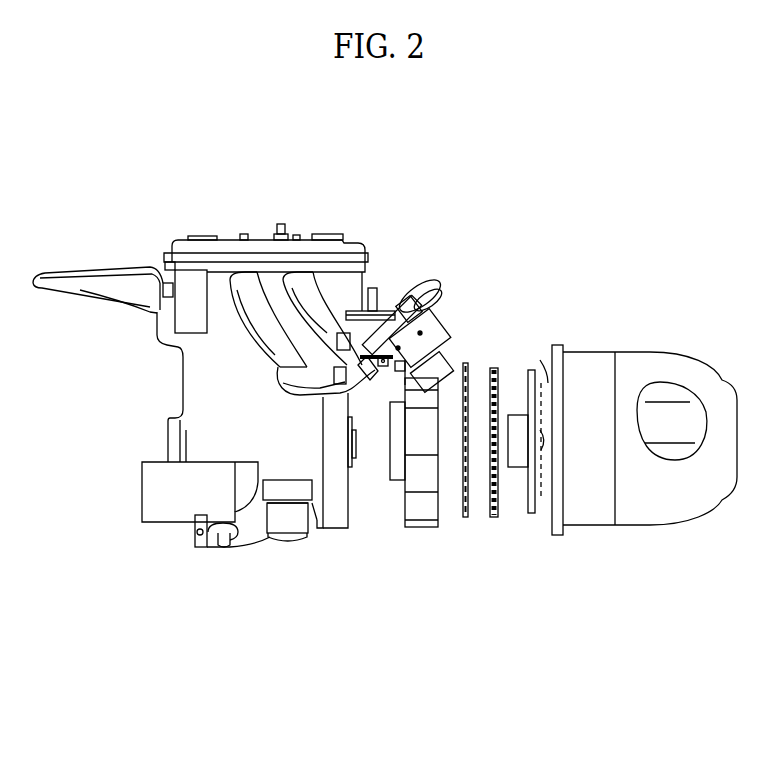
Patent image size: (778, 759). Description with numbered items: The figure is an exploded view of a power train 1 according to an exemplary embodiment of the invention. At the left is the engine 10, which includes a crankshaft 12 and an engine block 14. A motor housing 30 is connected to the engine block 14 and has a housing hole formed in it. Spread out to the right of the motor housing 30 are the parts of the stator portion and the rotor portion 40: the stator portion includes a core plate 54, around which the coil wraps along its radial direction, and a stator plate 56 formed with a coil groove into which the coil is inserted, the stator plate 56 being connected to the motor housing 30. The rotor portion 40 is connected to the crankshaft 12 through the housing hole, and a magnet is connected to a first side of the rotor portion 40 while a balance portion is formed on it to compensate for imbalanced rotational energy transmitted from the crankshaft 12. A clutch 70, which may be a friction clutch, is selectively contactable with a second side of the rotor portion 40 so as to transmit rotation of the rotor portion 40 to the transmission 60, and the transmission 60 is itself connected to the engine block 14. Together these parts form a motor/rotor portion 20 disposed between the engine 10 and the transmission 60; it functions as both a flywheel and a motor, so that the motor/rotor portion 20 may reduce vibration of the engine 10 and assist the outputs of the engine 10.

The power train 1 is at (175, 548).
The engine 10 is at (137, 353).
The crankshaft 12 is at (356, 447).
The engine block 14 is at (182, 383).
The motor/rotor portion 20 is at (500, 515).
The motor housing 30 is at (420, 528).
The rotor portion 40 is at (532, 521).
The core plate 54 is at (493, 518).
The stator plate 56 is at (465, 518).
The transmission 60 is at (598, 533).
The clutch 70 is at (548, 388).